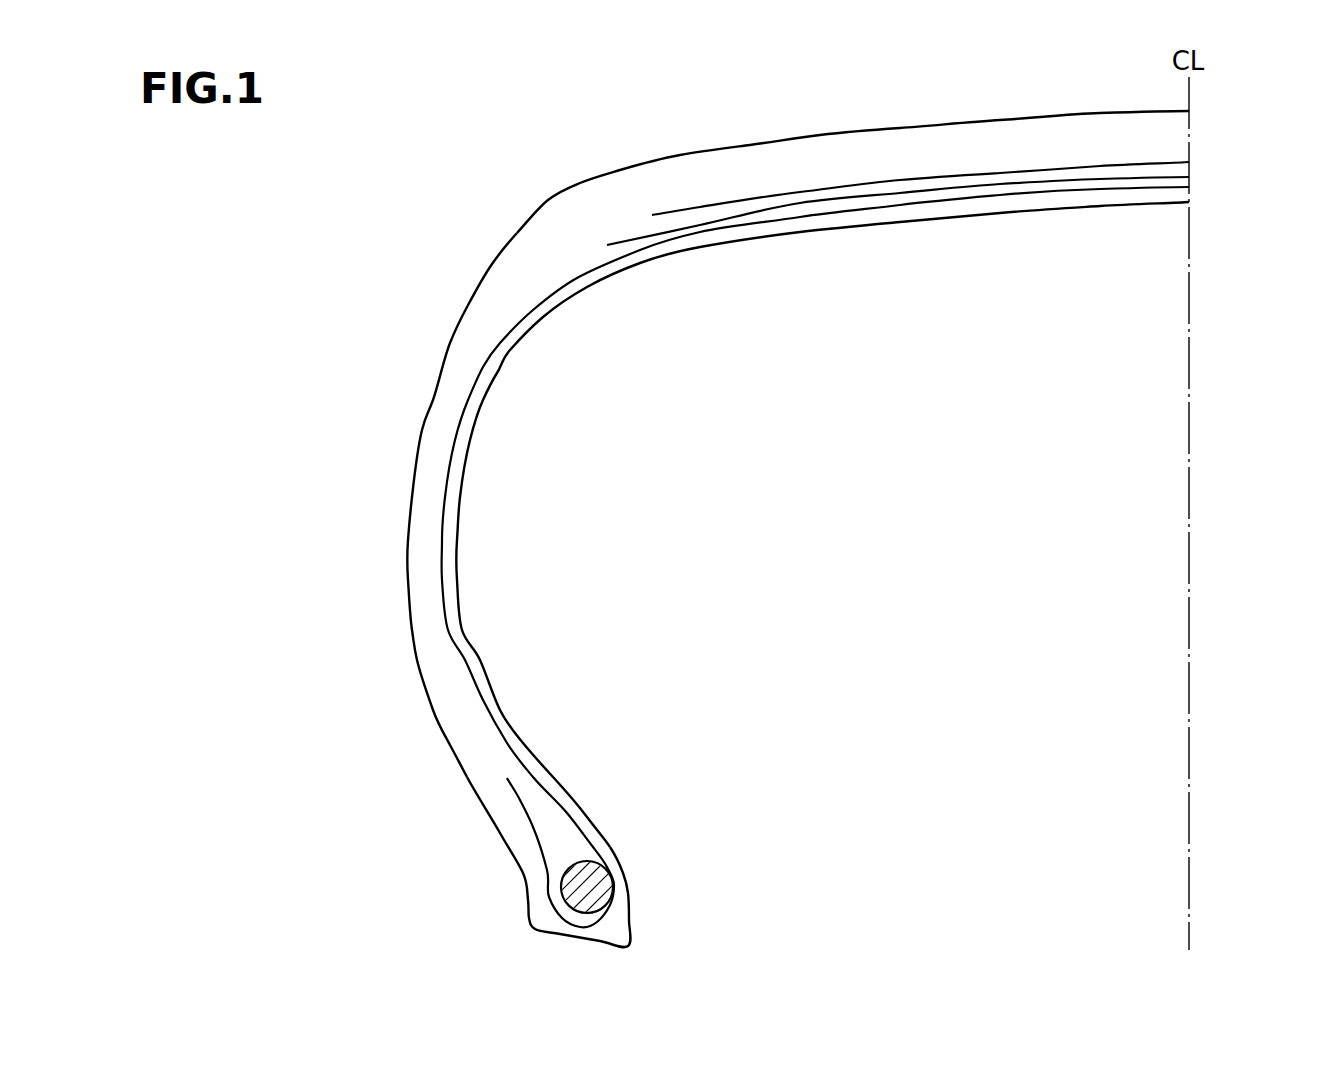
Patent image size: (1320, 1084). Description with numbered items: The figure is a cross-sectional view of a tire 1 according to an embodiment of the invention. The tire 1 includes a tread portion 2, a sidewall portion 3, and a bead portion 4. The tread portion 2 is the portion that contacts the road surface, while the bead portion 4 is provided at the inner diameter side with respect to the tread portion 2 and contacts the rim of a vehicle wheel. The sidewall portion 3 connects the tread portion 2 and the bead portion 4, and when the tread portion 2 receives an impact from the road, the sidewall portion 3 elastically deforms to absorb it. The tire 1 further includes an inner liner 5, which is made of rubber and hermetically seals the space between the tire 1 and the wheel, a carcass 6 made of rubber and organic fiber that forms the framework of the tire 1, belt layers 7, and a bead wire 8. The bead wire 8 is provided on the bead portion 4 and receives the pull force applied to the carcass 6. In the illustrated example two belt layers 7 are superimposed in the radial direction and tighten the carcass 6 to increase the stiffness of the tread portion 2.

The tire 1 is at (520, 143).
The tread portion 2 is at (824, 121).
The sidewall portion 3 is at (438, 363).
The bead portion 4 is at (516, 895).
The inner liner 5 is at (802, 233).
The carcass 6 is at (580, 280).
The belt layers 7 is at (1170, 162).
The bead wire 8 is at (612, 882).